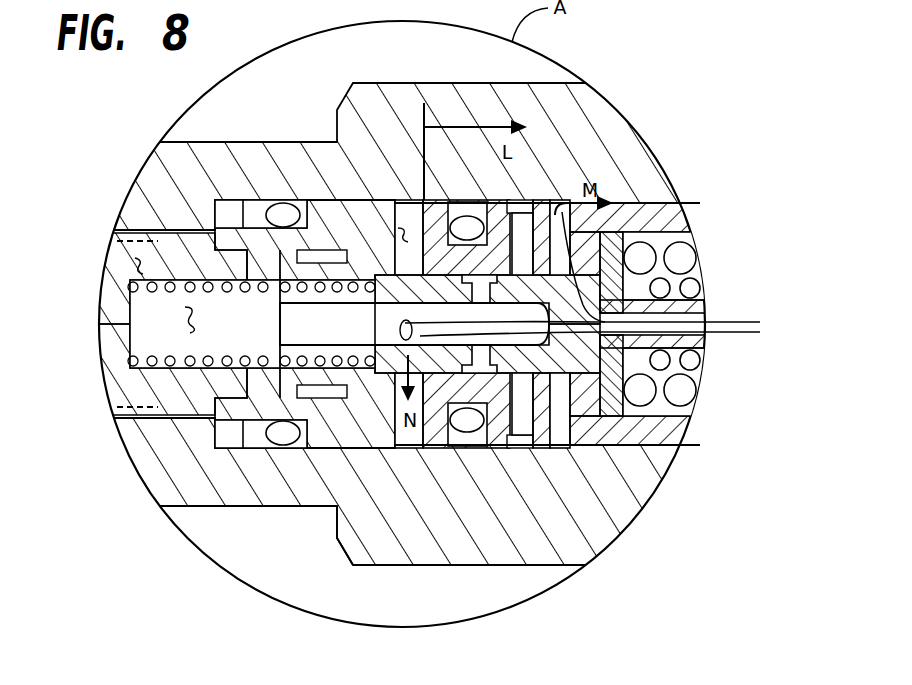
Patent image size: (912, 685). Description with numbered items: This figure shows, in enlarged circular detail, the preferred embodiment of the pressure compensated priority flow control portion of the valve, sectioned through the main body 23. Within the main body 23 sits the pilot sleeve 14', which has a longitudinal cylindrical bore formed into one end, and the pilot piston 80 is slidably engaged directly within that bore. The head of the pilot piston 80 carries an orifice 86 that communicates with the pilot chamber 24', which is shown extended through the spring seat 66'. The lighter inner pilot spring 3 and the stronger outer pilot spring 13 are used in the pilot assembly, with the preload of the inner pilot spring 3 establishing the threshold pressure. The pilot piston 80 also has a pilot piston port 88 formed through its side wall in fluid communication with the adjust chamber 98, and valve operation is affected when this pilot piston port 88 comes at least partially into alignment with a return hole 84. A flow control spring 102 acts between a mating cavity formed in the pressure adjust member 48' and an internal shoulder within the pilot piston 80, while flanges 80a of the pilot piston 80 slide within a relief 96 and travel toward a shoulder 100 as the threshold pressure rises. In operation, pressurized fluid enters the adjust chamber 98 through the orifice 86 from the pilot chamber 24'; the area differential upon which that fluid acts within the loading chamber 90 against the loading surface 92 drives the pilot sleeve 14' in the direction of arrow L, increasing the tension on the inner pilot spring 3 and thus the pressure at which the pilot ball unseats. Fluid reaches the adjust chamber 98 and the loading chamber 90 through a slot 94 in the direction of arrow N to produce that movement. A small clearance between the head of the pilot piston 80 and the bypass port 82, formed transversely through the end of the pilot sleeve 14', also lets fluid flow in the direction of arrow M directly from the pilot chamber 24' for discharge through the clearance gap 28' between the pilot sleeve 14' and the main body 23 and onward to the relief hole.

The inner pilot spring 3 is at (700, 290).
The outer pilot spring 13 is at (684, 260).
The pilot sleeve 14' is at (677, 324).
The main body 23 is at (620, 486).
The pilot chamber 24' is at (618, 276).
The clearance gap 28' is at (577, 309).
The pressure adjust member 48' is at (91, 322).
The spring seat 66' is at (707, 318).
The pilot piston 80 is at (660, 427).
The flanges 80a is at (160, 384).
The bypass port 82 is at (563, 423).
The return hole 84 is at (525, 420).
The orifice 86 is at (562, 332).
The pilot piston port 88 is at (472, 405).
The loading chamber 90 is at (252, 268).
The loading surface 92 is at (402, 216).
The slot 94 is at (312, 338).
The relief 96 is at (177, 250).
The adjust chamber 98 is at (162, 318).
The shoulder 100 is at (330, 425).
The flow control spring 102 is at (152, 360).